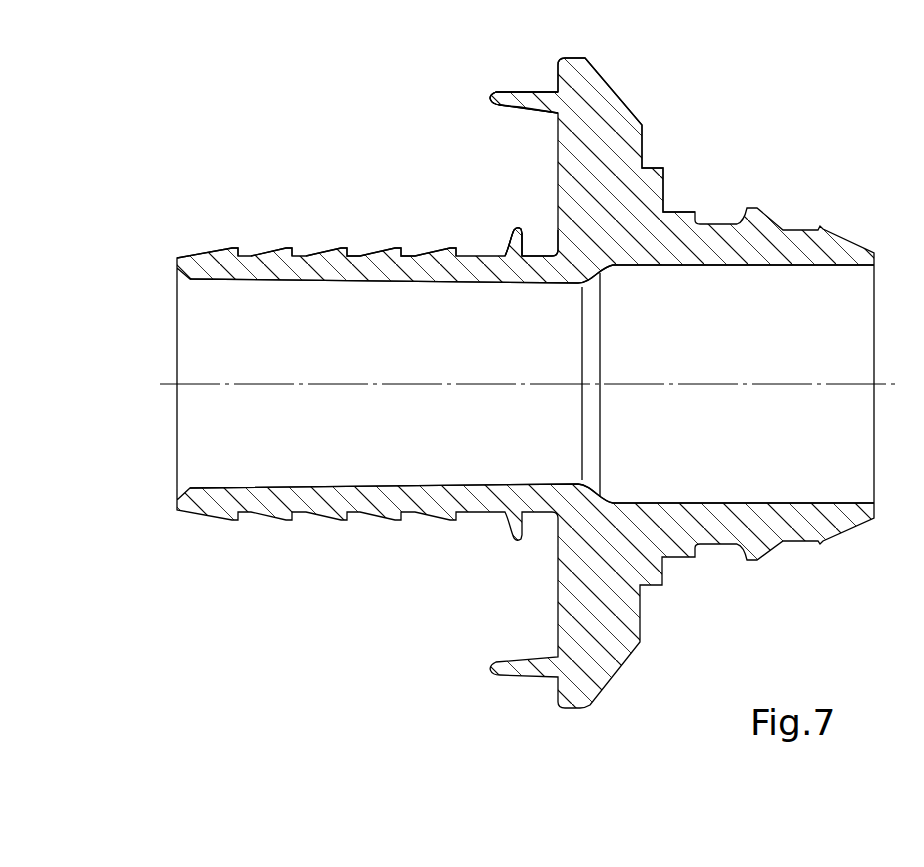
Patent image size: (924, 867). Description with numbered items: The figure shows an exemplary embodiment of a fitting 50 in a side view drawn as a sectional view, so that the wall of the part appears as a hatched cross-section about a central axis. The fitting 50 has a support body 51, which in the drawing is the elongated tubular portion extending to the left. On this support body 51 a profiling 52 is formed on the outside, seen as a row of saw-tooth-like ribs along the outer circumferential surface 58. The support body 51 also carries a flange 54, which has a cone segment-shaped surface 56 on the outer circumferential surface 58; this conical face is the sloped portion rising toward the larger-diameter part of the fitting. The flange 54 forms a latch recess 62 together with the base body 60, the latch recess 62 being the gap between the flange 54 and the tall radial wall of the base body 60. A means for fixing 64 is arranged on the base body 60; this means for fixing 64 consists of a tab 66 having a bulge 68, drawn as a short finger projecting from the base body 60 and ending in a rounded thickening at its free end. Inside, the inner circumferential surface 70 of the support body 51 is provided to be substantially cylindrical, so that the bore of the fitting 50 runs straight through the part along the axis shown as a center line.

The fitting 50 is at (832, 163).
The support body 51 is at (252, 252).
The profiling 52 is at (289, 247).
The flange 54 is at (507, 247).
The cone segment-shaped surface 56 is at (513, 244).
The outer circumferential surface 58 is at (367, 212).
The base body 60 is at (622, 150).
The latch recess 62 is at (538, 243).
The means for fixing 64 is at (474, 88).
The tab 66 is at (535, 103).
The bulge 68 is at (503, 91).
The inner circumferential surface 70 is at (316, 290).